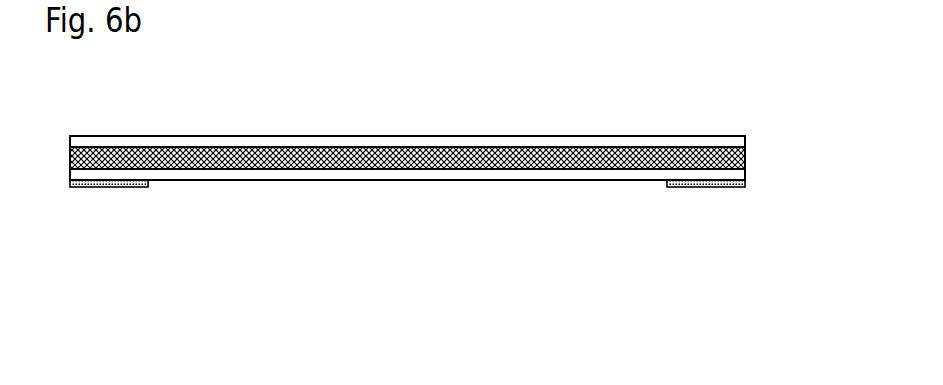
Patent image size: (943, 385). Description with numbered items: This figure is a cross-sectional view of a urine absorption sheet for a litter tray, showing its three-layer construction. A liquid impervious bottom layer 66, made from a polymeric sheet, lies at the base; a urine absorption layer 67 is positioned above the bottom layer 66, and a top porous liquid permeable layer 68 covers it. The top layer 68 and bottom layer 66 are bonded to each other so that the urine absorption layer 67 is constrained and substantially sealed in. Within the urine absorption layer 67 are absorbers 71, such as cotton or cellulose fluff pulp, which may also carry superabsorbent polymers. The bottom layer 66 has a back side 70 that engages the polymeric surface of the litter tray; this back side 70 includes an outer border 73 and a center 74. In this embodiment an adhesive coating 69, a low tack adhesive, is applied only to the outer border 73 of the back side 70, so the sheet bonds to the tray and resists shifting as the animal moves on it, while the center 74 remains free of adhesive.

The liquid impervious bottom layer 66 is at (437, 181).
The urine absorption layer 67 is at (673, 155).
The top porous liquid permeable layer 68 is at (447, 136).
The adhesive coating 69 is at (115, 187).
The back side 70 is at (213, 181).
The absorbers 71 is at (723, 157).
The outer border 73 is at (746, 180).
The center 74 is at (363, 181).